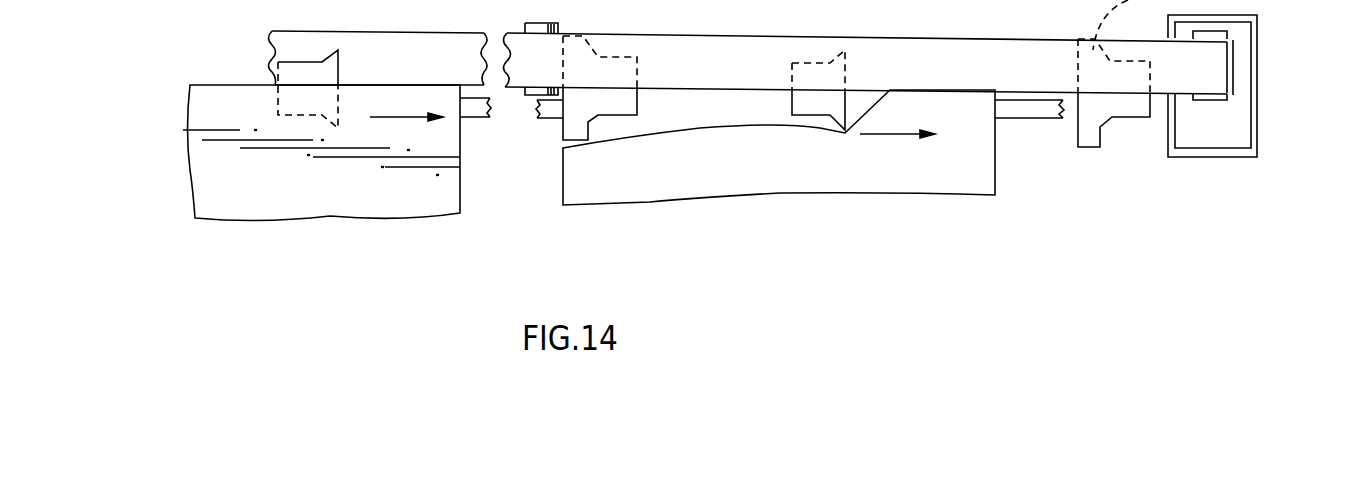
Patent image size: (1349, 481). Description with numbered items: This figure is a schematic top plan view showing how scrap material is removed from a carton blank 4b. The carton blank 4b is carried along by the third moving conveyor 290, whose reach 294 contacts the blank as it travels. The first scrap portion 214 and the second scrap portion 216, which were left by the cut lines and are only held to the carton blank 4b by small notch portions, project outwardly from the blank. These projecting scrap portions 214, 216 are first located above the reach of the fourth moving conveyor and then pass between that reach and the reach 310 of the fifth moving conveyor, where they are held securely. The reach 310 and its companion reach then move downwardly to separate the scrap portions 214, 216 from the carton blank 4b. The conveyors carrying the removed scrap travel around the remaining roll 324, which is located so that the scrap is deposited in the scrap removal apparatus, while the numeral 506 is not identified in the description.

The carton blank 4b is at (350, 202).
The first portion of scrap material 214 is at (340, 62).
The second portion of scrap material 216 is at (583, 58).
The third moving conveyor 290 is at (745, 118).
The reach of third moving conveyor 294 is at (477, 106).
The reach of fifth moving conveyor 310 is at (743, 75).
The roll 324 is at (1228, 35).
The rail segment 506 is at (287, 45).